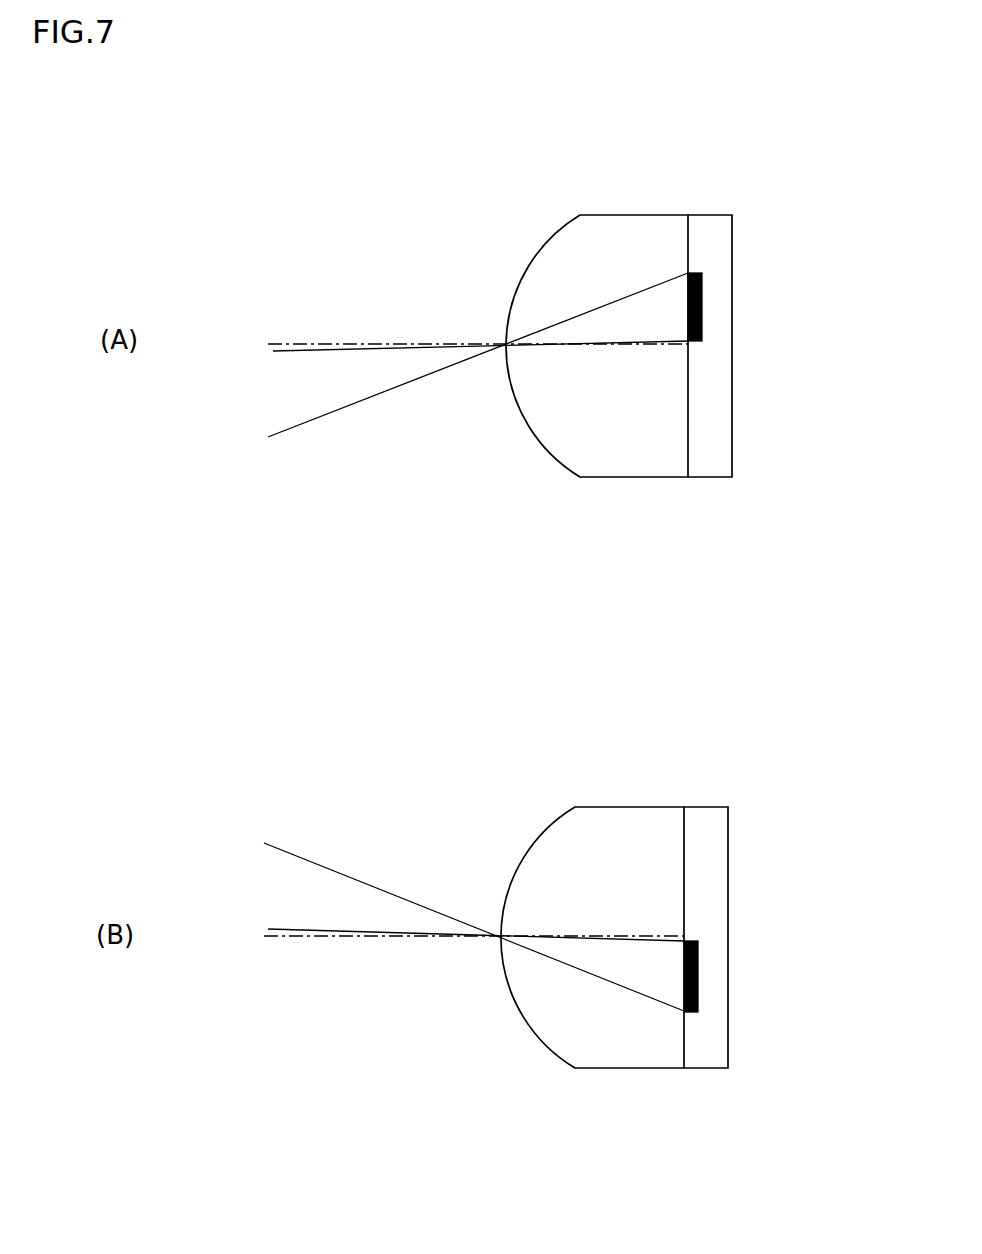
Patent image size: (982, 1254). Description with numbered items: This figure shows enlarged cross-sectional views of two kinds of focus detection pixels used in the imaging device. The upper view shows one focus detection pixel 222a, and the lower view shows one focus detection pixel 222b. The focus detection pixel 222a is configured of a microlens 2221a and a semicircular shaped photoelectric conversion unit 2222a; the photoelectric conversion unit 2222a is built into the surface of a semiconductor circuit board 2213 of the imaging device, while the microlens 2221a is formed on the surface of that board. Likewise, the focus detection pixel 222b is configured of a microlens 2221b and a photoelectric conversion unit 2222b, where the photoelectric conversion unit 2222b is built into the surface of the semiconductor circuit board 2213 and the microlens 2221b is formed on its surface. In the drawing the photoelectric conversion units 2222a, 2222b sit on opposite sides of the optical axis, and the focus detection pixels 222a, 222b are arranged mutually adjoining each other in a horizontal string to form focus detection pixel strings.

The focus detection pixel 222a is at (545, 310).
The focus detection pixel 222b is at (543, 900).
The semiconductor circuit board 2213 is at (723, 236).
The microlens 2221a is at (558, 253).
The microlens 2221b is at (555, 845).
The photoelectric conversion unit 2222a is at (702, 308).
The photoelectric conversion unit 2222b is at (698, 973).